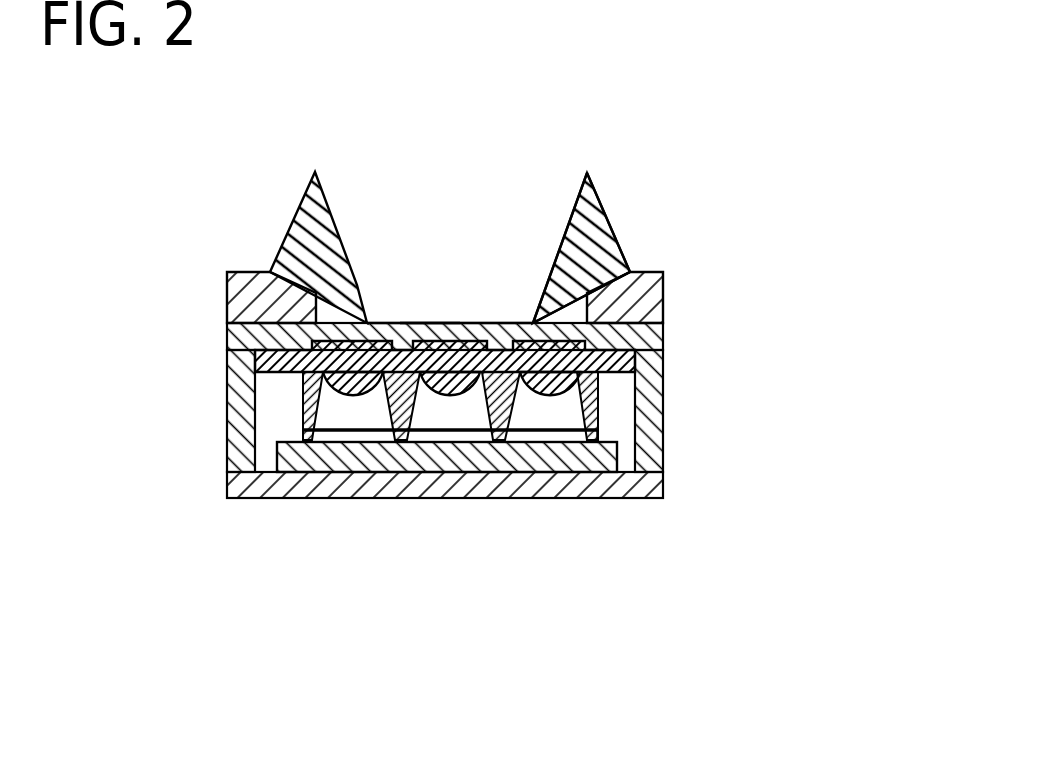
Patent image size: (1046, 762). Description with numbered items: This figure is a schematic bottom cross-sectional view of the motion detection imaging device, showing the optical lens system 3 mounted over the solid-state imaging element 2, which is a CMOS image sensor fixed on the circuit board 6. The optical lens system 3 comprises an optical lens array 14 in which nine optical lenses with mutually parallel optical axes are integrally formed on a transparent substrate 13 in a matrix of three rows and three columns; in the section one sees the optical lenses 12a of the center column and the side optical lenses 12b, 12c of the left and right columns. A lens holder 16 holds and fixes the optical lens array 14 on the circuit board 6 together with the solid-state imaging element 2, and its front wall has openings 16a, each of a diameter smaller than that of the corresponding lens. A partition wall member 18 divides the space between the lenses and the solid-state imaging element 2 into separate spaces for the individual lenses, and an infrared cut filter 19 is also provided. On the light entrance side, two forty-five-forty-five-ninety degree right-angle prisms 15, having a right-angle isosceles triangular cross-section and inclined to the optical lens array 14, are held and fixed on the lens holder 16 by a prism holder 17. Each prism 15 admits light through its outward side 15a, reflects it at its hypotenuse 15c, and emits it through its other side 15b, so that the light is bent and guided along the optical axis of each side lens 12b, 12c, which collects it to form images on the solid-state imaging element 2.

The solid-state imaging element 2 is at (600, 457).
The optical lens system 3 is at (186, 226).
The circuit board 6 is at (435, 487).
The optical lenses 12a is at (428, 322).
The optical lenses 12b is at (300, 353).
The optical lenses 12c is at (575, 355).
The transparent substrate 13 is at (578, 382).
The optical lens array 14 is at (850, 330).
The 45-45-90 degree right-angle prism 15 is at (305, 215).
The outward side 15a is at (620, 234).
The other side 15b is at (620, 279).
The hypotenuse 15c is at (565, 221).
The lens holder 16 is at (650, 412).
The openings 16a is at (351, 321).
The prism holder 17 is at (247, 293).
The partition wall member 18 is at (300, 397).
The infrared cut filter 19 is at (307, 418).